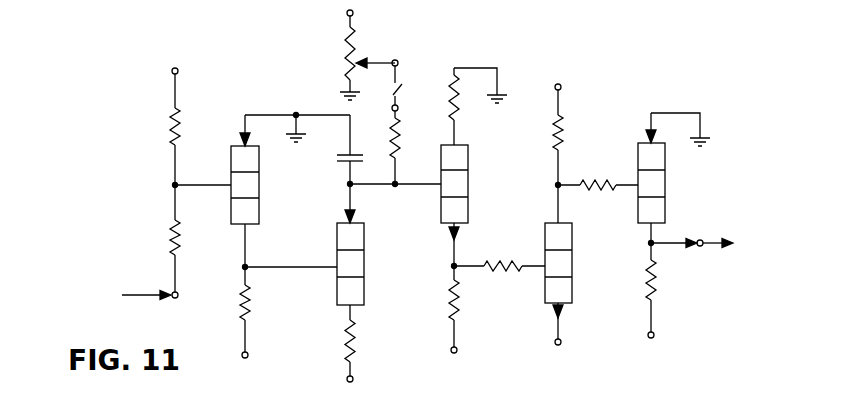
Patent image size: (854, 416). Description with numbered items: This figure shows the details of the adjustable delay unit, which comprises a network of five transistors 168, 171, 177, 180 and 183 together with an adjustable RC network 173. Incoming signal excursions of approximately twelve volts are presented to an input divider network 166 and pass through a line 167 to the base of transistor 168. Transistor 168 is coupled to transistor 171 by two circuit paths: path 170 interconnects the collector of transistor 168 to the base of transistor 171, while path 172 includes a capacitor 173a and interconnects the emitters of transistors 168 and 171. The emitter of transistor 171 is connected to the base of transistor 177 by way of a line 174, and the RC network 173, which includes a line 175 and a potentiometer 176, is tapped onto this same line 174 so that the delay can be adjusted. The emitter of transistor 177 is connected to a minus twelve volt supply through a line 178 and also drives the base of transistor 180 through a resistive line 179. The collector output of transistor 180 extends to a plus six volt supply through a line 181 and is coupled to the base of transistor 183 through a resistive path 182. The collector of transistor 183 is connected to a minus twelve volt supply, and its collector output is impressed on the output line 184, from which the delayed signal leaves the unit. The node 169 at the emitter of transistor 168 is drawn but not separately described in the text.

The input divider network 166 is at (156, 176).
The line 167 is at (209, 182).
The transistor 168 is at (259, 197).
The emitter junction 169 is at (242, 275).
The circuit path 170 is at (262, 265).
The transistor 171 is at (364, 281).
The circuit path 172 is at (273, 113).
The adjustable RC network 173 is at (384, 145).
The capacitor 173a is at (338, 161).
The line 174 is at (360, 186).
The line 175 is at (400, 89).
The potentiometer 176 is at (385, 48).
The transistor 177 is at (440, 199).
The line 178 is at (448, 295).
The resistive line 179 is at (535, 264).
The transistor 180 is at (572, 275).
The line 181 is at (558, 171).
The resistive path 182 is at (625, 183).
The transistor 183 is at (665, 205).
The output line 184 is at (665, 246).